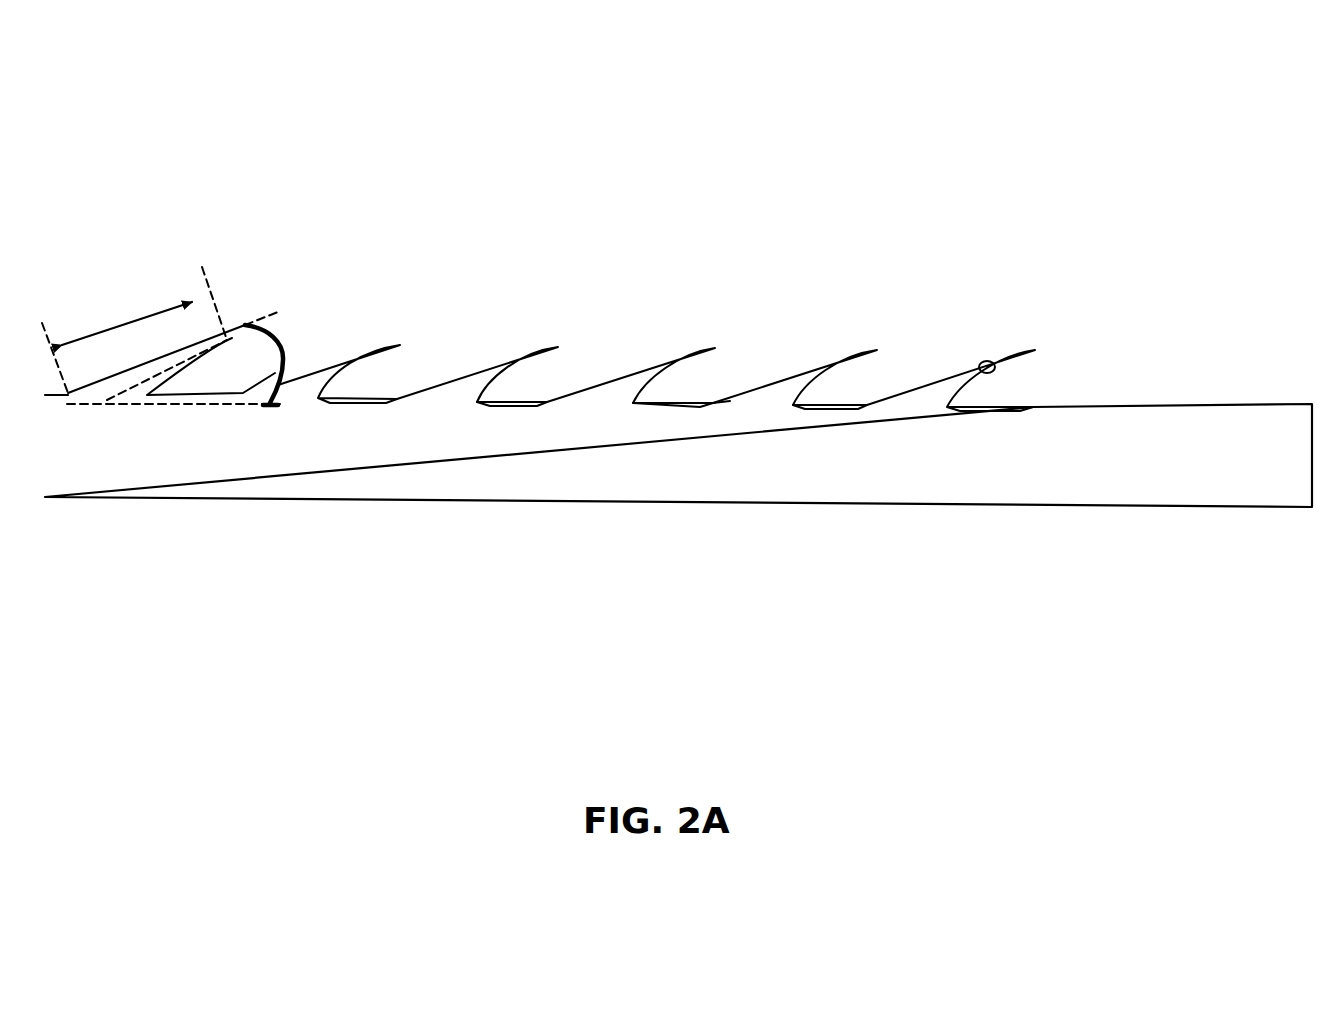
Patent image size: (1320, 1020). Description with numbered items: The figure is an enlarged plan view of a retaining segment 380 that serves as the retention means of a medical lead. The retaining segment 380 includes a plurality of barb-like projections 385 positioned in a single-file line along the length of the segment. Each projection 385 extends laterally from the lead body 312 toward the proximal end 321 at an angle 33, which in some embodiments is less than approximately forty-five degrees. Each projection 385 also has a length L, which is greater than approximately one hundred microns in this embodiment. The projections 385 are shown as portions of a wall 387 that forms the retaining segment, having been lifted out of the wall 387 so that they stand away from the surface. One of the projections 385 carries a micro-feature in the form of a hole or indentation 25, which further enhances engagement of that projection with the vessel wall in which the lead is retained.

The retaining segment 380 is at (599, 138).
The lead body 312 is at (1183, 482).
The proximal end 321 is at (1148, 315).
The barb-like projections 385 is at (633, 383).
The angle 33 is at (283, 353).
The hole or indentation 25 is at (983, 367).
The wall 387 is at (517, 403).
The length L is at (130, 320).